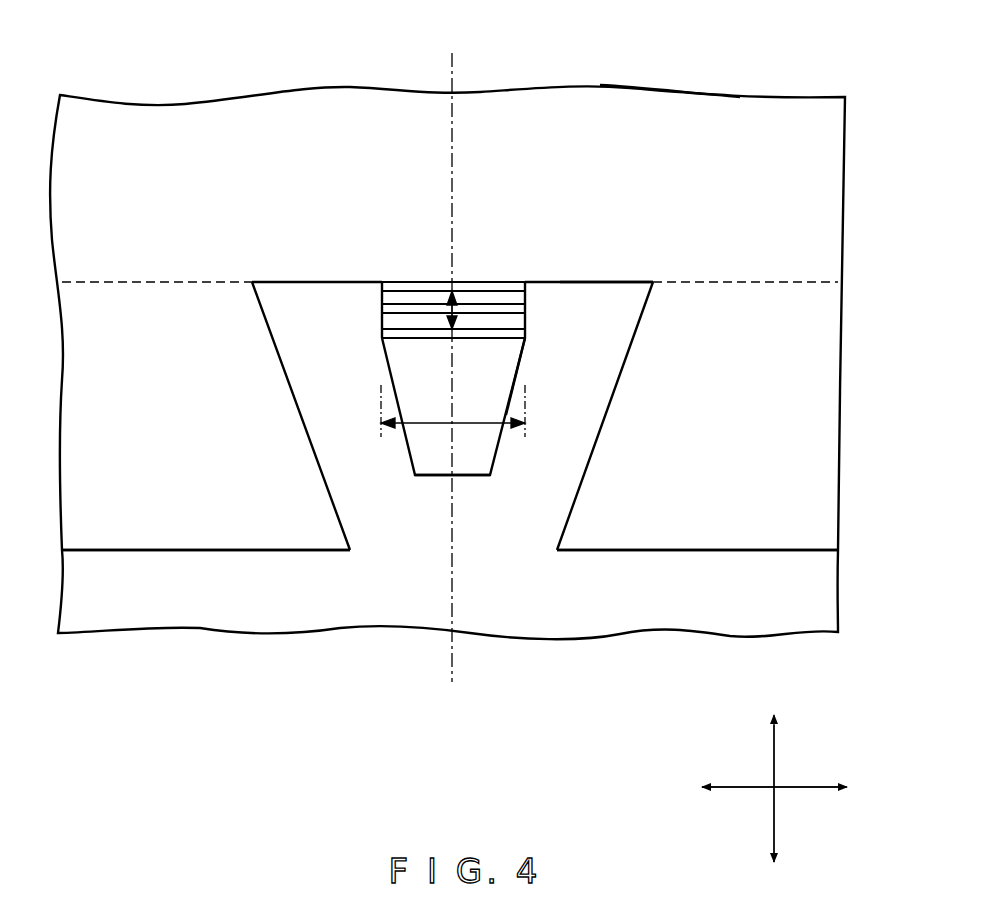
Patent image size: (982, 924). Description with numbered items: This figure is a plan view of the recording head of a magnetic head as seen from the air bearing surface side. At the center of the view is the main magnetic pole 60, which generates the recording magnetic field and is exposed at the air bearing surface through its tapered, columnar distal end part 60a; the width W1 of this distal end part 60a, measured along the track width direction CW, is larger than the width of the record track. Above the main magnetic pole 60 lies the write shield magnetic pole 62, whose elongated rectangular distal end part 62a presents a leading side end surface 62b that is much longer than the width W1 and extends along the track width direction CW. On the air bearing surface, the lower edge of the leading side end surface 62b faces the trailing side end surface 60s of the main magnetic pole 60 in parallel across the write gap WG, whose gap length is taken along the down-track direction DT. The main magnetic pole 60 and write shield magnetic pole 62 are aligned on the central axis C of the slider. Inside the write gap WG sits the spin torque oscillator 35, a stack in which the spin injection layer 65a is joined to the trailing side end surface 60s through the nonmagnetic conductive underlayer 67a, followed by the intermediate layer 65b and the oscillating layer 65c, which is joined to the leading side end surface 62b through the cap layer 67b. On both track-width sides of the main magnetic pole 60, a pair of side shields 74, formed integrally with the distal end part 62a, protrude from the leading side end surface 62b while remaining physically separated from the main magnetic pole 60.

The write shield magnetic pole 62 is at (379, 116).
The distal end part 62a is at (662, 118).
The leading side end surface 62b is at (603, 283).
The main magnetic pole 60 is at (424, 480).
The distal end part 60a is at (484, 440).
The trailing side end surface 60s is at (526, 323).
The spin torque oscillator 35 is at (197, 290).
The cap layer 67b is at (380, 286).
The oscillating layer 65c is at (380, 297).
The intermediate layer 65b is at (380, 308).
The spin injection layer 65a is at (380, 320).
The underlayer 67a is at (380, 334).
The side shields 74 is at (220, 522).
The central axis C is at (452, 658).
The width of the distal end part W1 is at (453, 411).
The write gap WG is at (456, 297).
The down-track direction DT is at (794, 783).
The track width direction CW is at (786, 805).